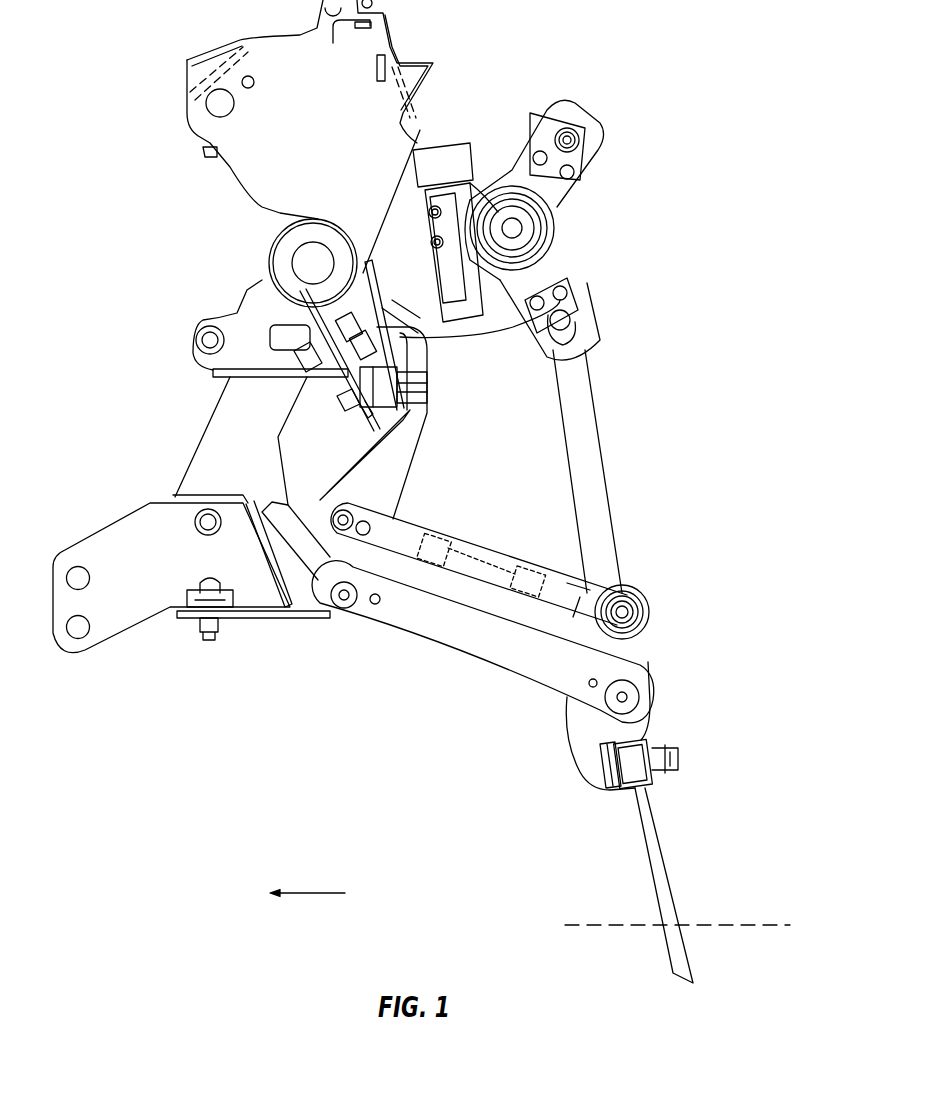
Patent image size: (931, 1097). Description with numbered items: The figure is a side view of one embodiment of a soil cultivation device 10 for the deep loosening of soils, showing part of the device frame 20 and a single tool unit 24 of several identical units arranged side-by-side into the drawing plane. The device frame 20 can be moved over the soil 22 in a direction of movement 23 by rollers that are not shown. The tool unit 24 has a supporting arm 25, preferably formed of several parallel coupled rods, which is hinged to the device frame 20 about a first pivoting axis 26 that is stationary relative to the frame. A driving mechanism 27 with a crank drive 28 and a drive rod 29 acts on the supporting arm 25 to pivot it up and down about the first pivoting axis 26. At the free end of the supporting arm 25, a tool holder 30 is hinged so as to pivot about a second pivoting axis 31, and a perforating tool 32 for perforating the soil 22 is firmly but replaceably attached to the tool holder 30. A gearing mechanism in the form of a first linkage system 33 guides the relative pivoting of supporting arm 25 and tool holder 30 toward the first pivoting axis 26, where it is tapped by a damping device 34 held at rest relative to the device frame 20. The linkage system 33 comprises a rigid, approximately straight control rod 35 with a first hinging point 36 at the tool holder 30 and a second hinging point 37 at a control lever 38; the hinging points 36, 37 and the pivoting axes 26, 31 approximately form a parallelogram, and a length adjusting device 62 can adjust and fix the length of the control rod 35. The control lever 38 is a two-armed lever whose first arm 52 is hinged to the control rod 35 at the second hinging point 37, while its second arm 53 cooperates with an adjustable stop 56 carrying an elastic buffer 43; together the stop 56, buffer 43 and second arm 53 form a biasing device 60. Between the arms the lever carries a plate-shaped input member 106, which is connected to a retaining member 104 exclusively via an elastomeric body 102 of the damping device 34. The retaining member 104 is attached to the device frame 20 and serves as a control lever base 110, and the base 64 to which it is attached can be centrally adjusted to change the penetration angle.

The soil cultivation device 10 is at (770, 355).
The device frame 20 is at (132, 603).
The soil 22 is at (755, 925).
The direction of movement 23 is at (318, 897).
The tool unit 24 is at (733, 718).
The supporting arm 25 is at (448, 645).
The first pivoting axis 26 is at (340, 620).
The driving mechanism 27 is at (668, 212).
The crank drive 28 is at (587, 290).
The drive rod 29 is at (583, 395).
The tool holder 30 is at (582, 738).
The second pivoting axis 31 is at (625, 697).
The perforating tool 32 is at (668, 890).
The first linkage system 33 is at (500, 532).
The damping device 34 is at (410, 332).
The control rod 35 is at (428, 532).
The first hinging point 36 is at (648, 605).
The second hinging point 37 is at (287, 605).
The control lever 38 is at (437, 447).
The elastic buffer 43 is at (388, 284).
The first arm 52 is at (377, 482).
The second arm 53 is at (570, 260).
The stop 56 is at (430, 132).
The biasing device 60 is at (232, 380).
The length adjusting device 62 is at (522, 592).
The base 64 is at (272, 238).
The elastomeric body 102 is at (380, 397).
The retaining member 104 is at (352, 425).
The input member 106 is at (390, 378).
The control lever base 110 is at (307, 390).